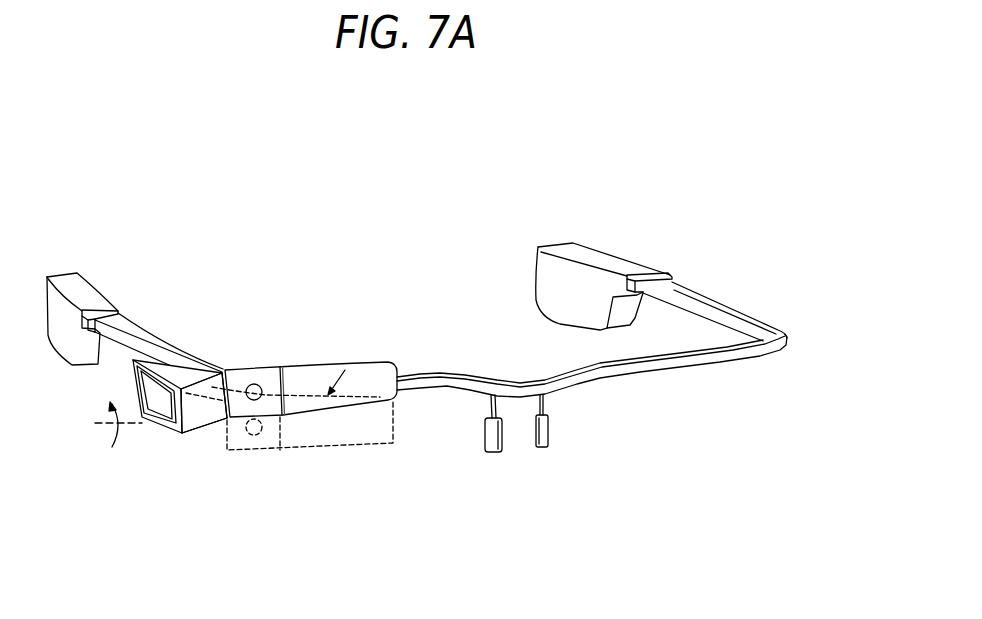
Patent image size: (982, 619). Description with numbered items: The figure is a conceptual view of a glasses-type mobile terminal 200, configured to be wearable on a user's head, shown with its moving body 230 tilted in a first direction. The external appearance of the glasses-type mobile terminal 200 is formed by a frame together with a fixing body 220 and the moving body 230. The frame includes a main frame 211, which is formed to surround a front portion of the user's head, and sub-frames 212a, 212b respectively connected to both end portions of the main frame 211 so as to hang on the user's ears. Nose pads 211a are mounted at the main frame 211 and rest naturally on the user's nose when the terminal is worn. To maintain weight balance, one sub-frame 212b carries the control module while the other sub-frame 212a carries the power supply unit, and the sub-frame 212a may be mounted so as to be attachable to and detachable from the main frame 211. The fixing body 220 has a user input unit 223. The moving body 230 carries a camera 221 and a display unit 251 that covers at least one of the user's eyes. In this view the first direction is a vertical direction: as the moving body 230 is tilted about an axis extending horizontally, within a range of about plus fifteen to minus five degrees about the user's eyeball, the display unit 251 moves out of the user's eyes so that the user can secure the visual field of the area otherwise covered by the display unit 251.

The glasses-type mobile terminal 200 is at (606, 212).
The main frame 211 is at (455, 372).
The nose pads 211a is at (490, 443).
The sub-frame 212a is at (88, 283).
The sub-frame 212b is at (543, 265).
The fixing body 220 is at (130, 386).
The camera 221 is at (255, 383).
The user input unit 223 is at (153, 420).
The moving body 230 is at (202, 418).
The display unit 251 is at (363, 370).